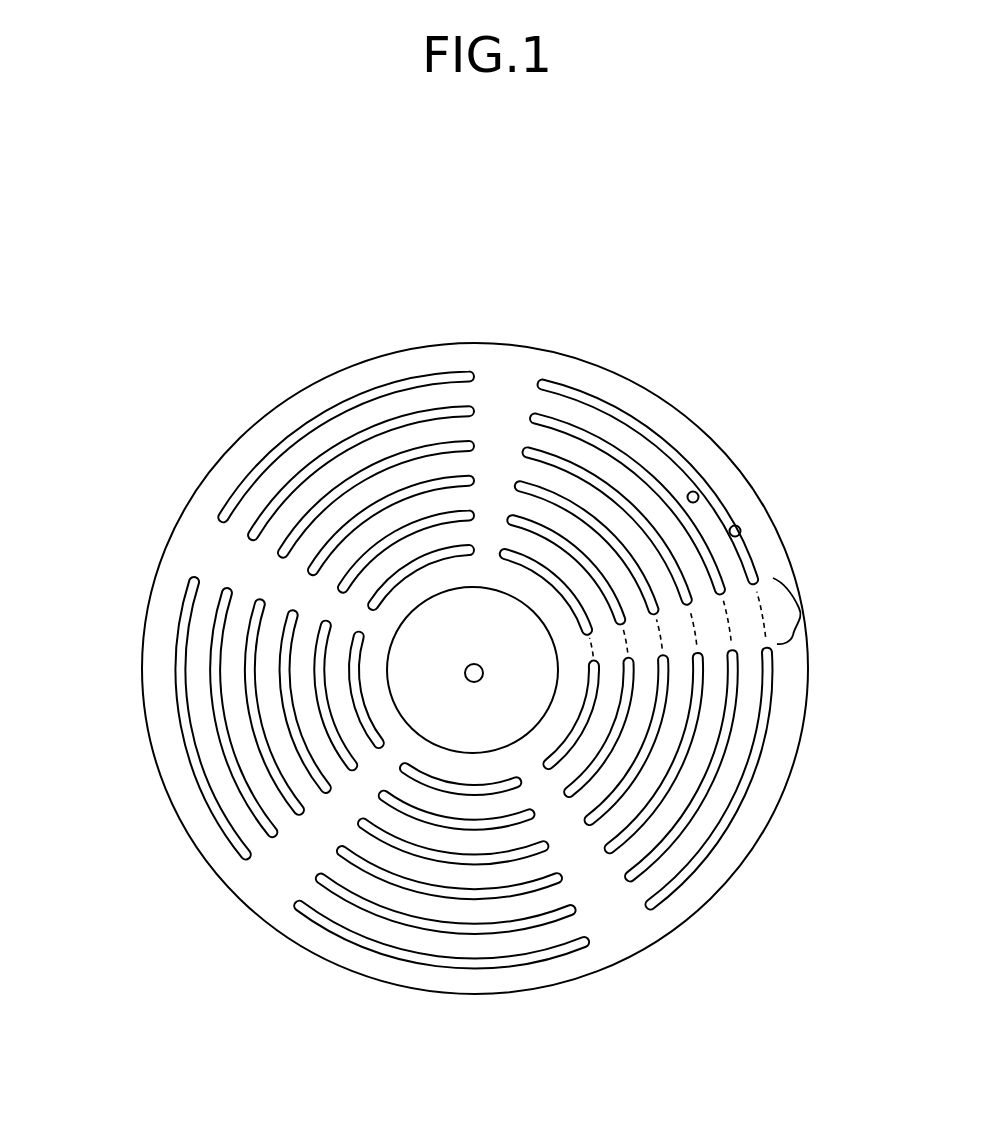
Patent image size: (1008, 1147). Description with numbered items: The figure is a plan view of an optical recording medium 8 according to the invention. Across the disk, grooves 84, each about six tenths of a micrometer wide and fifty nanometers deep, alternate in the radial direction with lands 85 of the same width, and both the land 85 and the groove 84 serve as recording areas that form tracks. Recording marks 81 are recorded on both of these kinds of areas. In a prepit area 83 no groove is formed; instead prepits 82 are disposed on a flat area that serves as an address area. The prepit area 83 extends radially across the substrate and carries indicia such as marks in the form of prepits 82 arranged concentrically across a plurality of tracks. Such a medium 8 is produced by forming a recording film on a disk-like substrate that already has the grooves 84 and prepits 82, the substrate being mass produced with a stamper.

The plate 8 is at (166, 548).
The recording mark 81 is at (697, 492).
The prepit 82 is at (758, 588).
The prepit area 83 is at (799, 608).
The groove 84 is at (588, 398).
The land 85 is at (658, 463).